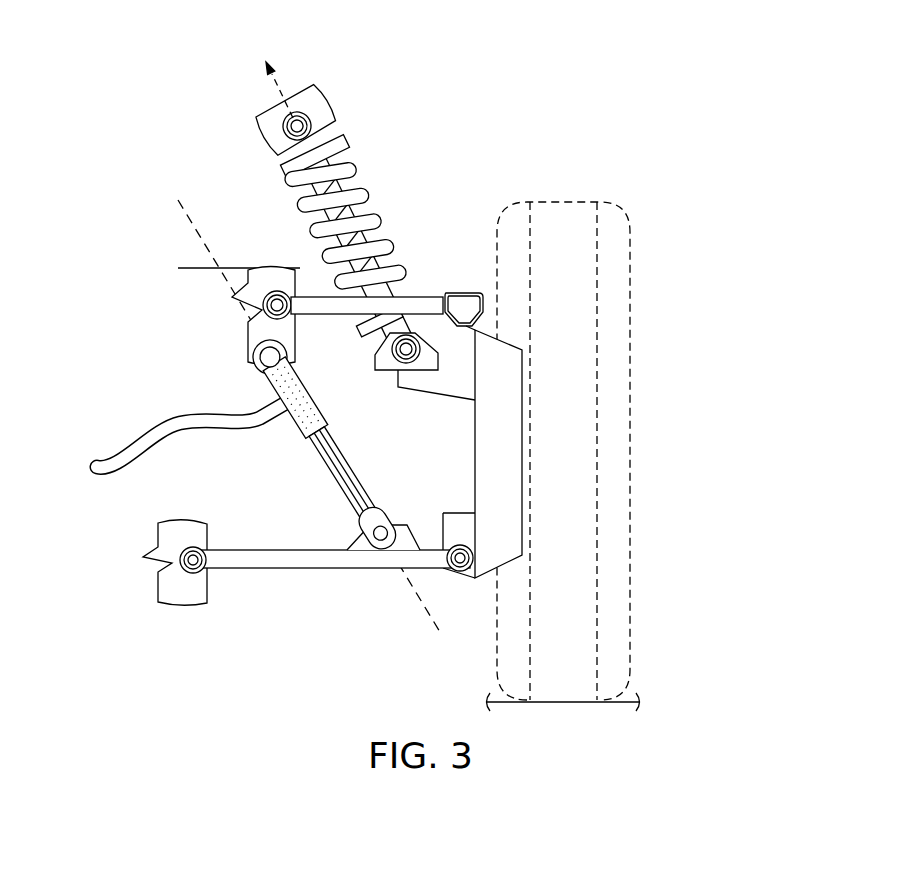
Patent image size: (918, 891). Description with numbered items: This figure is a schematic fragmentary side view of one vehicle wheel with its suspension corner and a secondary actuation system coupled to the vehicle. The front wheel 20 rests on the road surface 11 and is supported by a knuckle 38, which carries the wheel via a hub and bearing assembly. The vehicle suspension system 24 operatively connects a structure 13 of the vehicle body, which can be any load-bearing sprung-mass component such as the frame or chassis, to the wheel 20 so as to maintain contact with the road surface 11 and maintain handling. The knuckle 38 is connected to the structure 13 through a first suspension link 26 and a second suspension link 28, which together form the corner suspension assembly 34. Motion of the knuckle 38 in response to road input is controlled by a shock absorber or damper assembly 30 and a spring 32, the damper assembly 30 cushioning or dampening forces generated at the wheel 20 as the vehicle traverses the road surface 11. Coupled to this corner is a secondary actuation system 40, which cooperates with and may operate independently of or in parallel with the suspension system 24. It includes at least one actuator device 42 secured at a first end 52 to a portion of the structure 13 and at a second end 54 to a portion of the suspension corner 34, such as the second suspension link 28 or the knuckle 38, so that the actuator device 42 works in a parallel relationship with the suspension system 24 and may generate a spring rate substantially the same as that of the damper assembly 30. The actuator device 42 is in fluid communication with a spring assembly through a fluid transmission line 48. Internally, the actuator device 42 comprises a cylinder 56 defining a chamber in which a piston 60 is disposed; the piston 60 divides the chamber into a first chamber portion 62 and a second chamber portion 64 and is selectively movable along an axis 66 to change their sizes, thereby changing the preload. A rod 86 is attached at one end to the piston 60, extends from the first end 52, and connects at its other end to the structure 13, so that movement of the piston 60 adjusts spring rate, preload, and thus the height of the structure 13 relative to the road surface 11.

The road surface 11 is at (495, 697).
The structure 13 is at (232, 297).
The front wheel 20 is at (548, 200).
The vehicle suspension system 24 is at (528, 88).
The first suspension link 26 is at (440, 298).
The second suspension link 28 is at (256, 562).
The shock absorber or damper assembly 30 is at (350, 128).
The spring 32 is at (374, 222).
The corner suspension assembly 34 is at (395, 178).
The knuckle 38 is at (486, 338).
The secondary actuation system 40 is at (250, 447).
The actuator device 42 is at (305, 478).
The fluid transmission line 48 is at (160, 422).
The first end 52 is at (261, 354).
The second end 54 is at (378, 546).
The cylinder 56 is at (330, 426).
The piston 60 is at (348, 486).
The first chamber portion 62 is at (302, 396).
The second chamber portion 64 is at (372, 508).
The axis 66 is at (184, 232).
The rod 86 is at (258, 366).